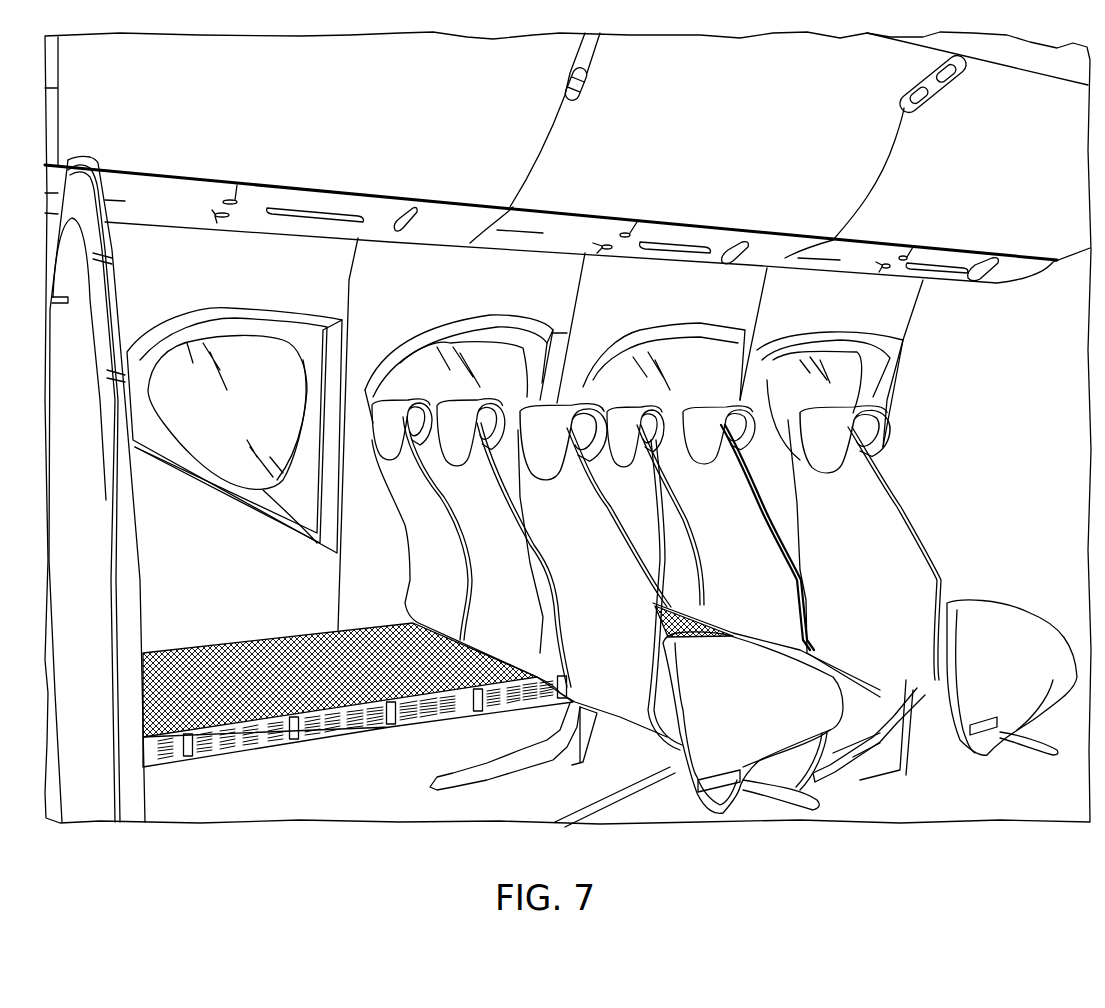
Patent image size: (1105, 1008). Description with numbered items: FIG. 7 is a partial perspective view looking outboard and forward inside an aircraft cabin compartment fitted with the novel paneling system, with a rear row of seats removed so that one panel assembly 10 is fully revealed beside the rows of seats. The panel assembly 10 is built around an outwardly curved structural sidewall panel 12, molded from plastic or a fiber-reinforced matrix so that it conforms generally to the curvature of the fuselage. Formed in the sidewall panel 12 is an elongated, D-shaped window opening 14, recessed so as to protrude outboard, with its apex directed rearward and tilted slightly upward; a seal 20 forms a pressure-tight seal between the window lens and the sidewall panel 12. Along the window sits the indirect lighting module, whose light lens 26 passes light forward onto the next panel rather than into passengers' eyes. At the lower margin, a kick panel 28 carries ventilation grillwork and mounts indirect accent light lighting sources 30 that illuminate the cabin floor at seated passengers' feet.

The panel assembly 10 is at (310, 596).
The sidewall panel 12 is at (193, 257).
The window opening 14 is at (277, 373).
The seal 20 is at (333, 290).
The light lens 26 is at (345, 497).
The kick panel 28 is at (233, 660).
The indirect accent light lighting sources 30 is at (293, 737).